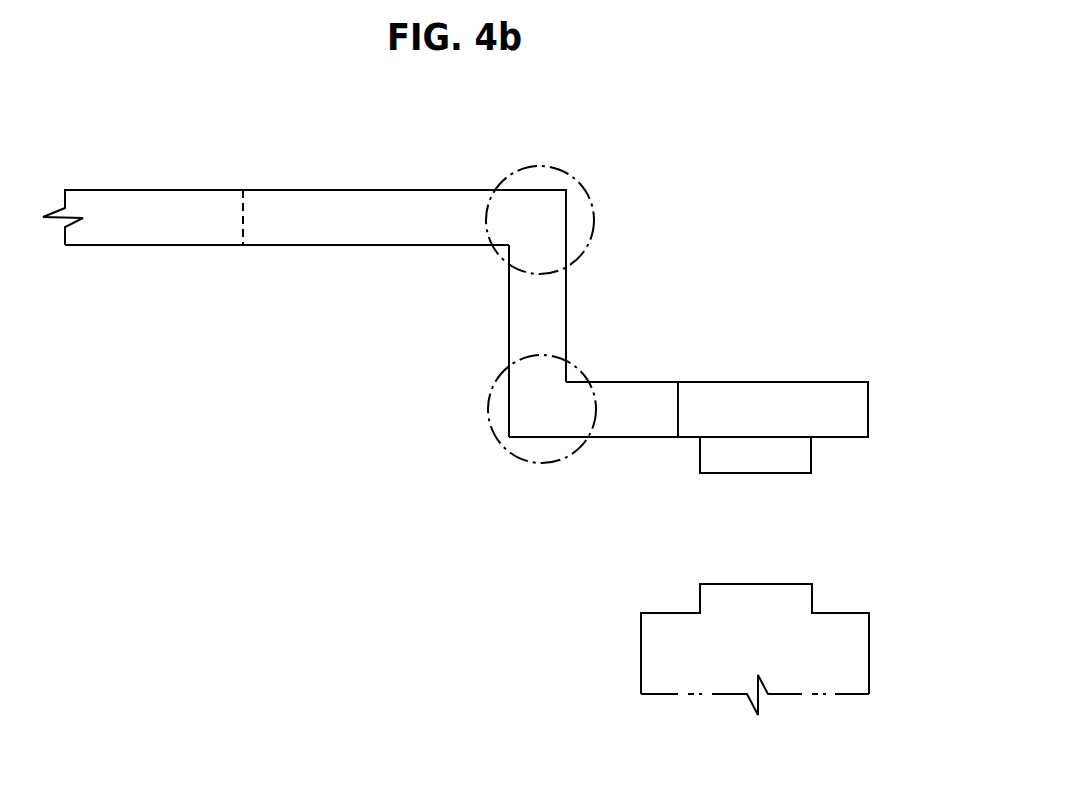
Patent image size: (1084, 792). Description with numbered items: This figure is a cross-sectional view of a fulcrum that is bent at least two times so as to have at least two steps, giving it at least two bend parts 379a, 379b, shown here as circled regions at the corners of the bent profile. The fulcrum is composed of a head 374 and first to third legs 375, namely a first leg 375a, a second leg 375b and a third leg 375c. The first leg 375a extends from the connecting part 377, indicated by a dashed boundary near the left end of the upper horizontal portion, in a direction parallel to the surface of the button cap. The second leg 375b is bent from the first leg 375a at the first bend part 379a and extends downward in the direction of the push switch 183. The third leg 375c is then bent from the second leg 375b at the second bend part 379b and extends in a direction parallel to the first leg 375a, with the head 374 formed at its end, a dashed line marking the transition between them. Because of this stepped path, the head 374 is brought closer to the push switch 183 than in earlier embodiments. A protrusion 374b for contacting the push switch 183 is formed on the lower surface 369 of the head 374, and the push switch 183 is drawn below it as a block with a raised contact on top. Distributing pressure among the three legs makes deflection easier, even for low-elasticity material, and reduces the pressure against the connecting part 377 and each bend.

The legs 375 is at (392, 271).
The first leg 375a is at (463, 200).
The second leg 375b is at (560, 305).
The third leg 375c is at (625, 356).
The connecting part 377 is at (243, 217).
The bend part 379a is at (522, 227).
The bend part 379b is at (530, 420).
The head 374 is at (807, 390).
The protrusion 374b is at (708, 453).
The lower surface 369 is at (850, 437).
The push switch 183 is at (862, 653).